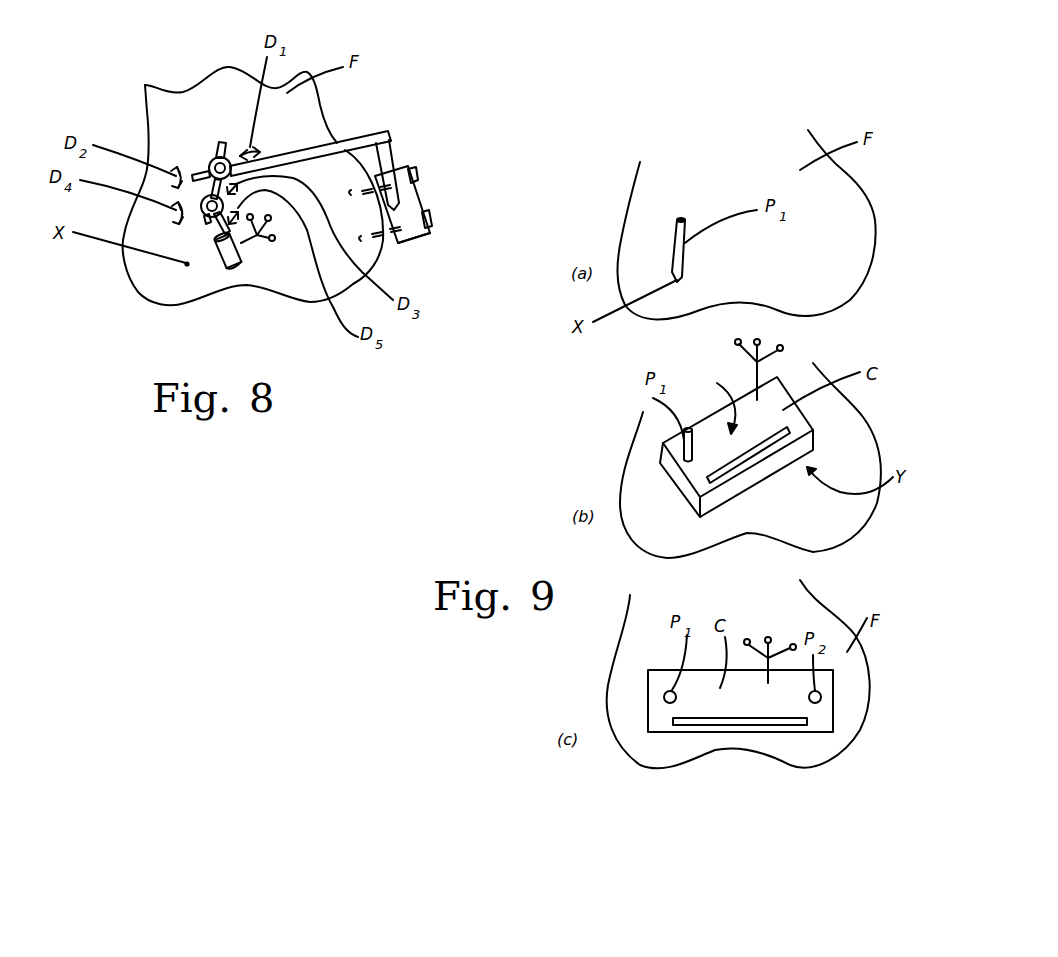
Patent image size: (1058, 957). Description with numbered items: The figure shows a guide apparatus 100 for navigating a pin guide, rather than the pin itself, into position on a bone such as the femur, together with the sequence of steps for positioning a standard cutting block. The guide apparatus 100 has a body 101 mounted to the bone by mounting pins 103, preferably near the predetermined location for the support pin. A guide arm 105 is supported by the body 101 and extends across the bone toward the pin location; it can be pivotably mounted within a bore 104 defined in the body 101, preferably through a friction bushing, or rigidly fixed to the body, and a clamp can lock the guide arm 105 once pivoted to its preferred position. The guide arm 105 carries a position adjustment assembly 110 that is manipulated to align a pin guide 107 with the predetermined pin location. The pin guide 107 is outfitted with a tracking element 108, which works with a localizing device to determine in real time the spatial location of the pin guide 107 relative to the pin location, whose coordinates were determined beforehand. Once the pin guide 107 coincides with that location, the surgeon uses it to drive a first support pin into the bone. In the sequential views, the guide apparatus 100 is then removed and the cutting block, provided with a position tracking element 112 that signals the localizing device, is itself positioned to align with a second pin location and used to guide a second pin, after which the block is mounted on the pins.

In FIG. 8, the guide apparatus 100 is at (397, 116).
In FIG. 8, the body 101 is at (421, 201).
In FIG. 8, the mounting pins 103 is at (422, 175).
In FIG. 8, the bore 104 is at (408, 247).
In FIG. 8, the guide arm 105 is at (360, 138).
In FIG. 8, the pin guide 107 is at (218, 257).
In FIG. 8, the tracking element 108 is at (262, 240).
In FIG. 8, the position adjustment assembly 110 is at (186, 146).
In FIG. 9, the position tracking element 112 is at (760, 367).